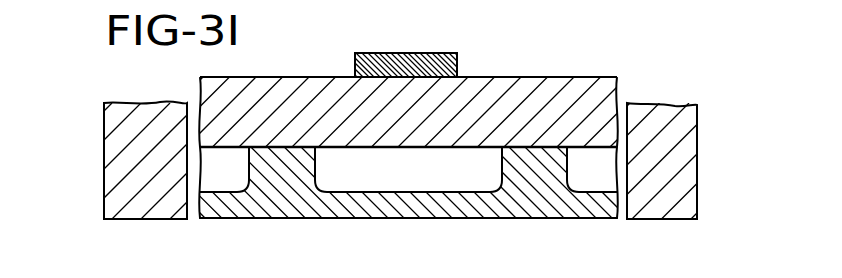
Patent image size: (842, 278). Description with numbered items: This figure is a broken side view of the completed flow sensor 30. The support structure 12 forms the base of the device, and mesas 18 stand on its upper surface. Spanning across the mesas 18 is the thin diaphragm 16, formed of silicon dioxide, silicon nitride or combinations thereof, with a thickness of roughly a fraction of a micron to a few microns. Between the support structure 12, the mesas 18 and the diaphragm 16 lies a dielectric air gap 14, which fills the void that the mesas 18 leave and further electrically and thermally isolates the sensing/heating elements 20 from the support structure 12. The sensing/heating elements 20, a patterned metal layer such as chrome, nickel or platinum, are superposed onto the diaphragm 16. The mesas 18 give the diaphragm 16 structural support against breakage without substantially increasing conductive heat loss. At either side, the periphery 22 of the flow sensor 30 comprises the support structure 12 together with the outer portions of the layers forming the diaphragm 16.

The support structure 12 is at (392, 206).
The dielectric air gap 14 is at (412, 179).
The diaphragm 16 is at (326, 83).
The mesas 18 is at (313, 167).
The sensing/heating elements 20 is at (440, 54).
The periphery 22 is at (112, 159).
The flow sensor 30 is at (368, 138).